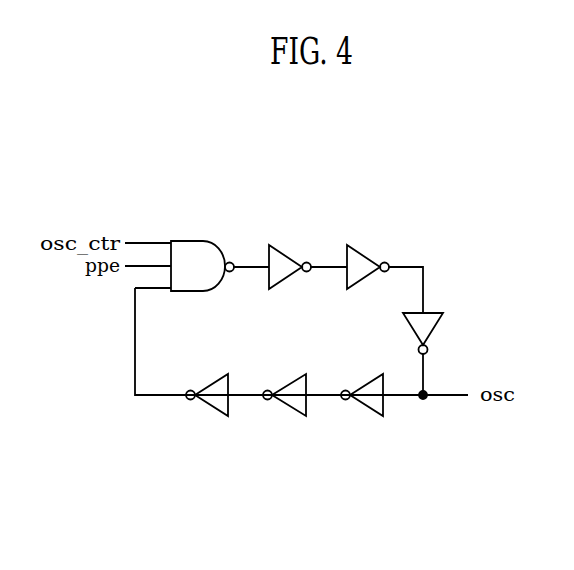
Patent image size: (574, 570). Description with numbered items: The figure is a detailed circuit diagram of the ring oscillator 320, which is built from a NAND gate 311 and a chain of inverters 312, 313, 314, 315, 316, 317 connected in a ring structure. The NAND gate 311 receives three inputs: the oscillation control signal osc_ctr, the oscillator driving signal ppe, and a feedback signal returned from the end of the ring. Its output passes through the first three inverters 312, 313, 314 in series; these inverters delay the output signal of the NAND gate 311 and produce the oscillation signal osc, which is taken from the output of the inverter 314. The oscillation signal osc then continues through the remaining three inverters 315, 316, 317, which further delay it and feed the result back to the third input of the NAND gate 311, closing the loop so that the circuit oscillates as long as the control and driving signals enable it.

The ring oscillator 320 is at (445, 188).
The NAND gate 311 is at (188, 240).
The inverter 312 is at (288, 250).
The inverter 313 is at (365, 250).
The inverter 314 is at (437, 312).
The inverter 315 is at (368, 388).
The inverter 316 is at (292, 388).
The inverter 317 is at (212, 388).